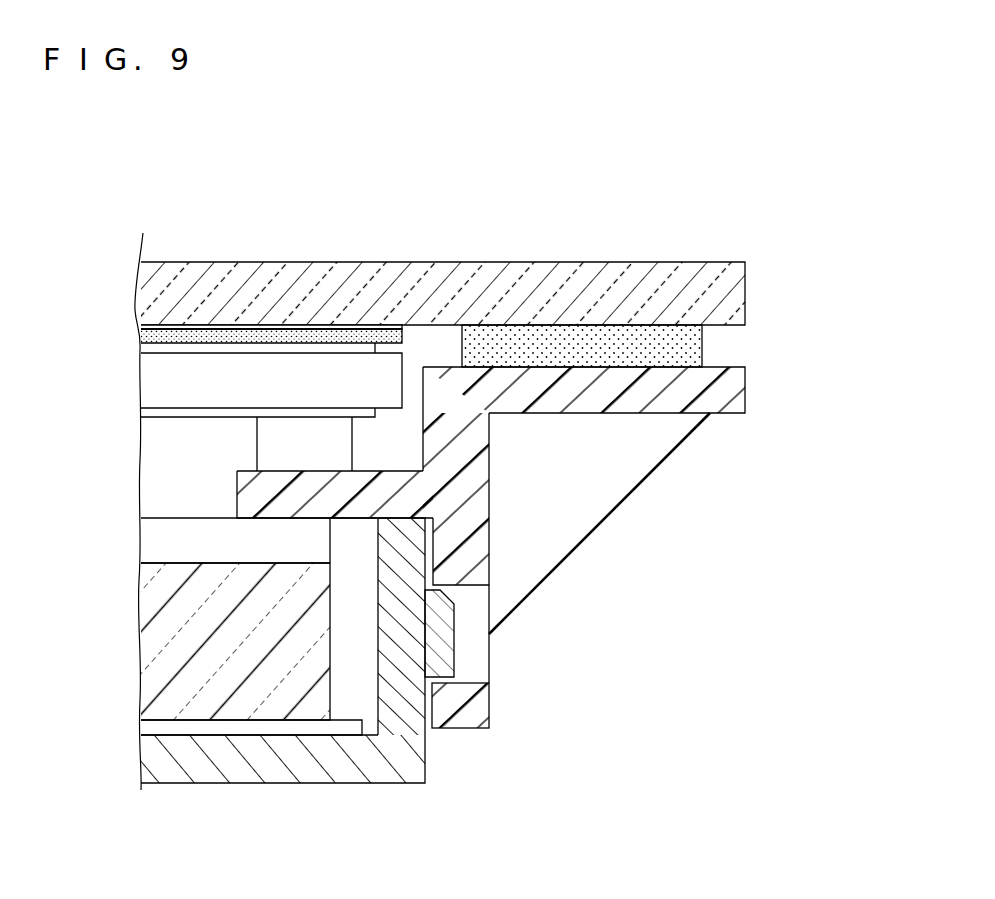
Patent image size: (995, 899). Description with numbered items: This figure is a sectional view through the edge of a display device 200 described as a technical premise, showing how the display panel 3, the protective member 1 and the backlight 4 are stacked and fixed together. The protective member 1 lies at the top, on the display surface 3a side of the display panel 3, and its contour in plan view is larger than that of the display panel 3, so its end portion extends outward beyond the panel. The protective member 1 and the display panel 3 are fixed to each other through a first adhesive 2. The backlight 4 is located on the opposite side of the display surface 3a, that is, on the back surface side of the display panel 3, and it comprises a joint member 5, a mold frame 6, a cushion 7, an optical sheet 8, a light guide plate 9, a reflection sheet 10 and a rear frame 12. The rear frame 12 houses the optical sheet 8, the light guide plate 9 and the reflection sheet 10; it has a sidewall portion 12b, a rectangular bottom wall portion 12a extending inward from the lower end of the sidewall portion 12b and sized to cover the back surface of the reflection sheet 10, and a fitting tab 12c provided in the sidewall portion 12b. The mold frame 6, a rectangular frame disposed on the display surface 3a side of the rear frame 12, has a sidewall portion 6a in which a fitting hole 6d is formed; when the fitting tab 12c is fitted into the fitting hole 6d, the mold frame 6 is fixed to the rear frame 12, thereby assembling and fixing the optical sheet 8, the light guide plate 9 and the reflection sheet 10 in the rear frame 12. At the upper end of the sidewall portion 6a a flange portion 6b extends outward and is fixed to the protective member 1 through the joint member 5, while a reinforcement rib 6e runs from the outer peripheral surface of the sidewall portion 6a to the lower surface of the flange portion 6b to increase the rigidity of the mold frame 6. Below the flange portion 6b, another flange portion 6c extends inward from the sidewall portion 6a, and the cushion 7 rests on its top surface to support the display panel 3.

The display device 200 is at (104, 134).
The protective member 1 is at (747, 292).
The first adhesive 2 is at (141, 333).
The display panel 3 is at (131, 343).
The display surface 3a is at (328, 341).
The backlight 4 is at (798, 328).
The joint member 5 is at (704, 345).
The mold frame 6 is at (441, 588).
The sidewall portion 6a is at (478, 710).
The flange portion 6b is at (746, 395).
The flange portion 6c is at (245, 497).
The fitting hole 6d is at (464, 590).
The reinforcement rib 6e is at (592, 538).
The cushion 7 is at (262, 446).
The optical sheet 8 is at (150, 540).
The light guide plate 9 is at (152, 662).
The reflection sheet 10 is at (152, 730).
The rear frame 12 is at (320, 691).
The bottom wall portion 12a is at (150, 766).
The sidewall portion 12b is at (388, 637).
The fitting tab 12c is at (440, 663).